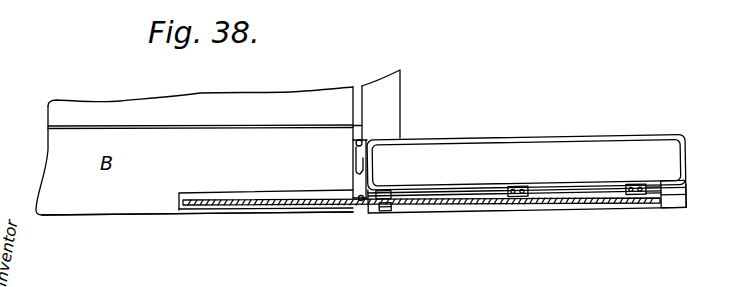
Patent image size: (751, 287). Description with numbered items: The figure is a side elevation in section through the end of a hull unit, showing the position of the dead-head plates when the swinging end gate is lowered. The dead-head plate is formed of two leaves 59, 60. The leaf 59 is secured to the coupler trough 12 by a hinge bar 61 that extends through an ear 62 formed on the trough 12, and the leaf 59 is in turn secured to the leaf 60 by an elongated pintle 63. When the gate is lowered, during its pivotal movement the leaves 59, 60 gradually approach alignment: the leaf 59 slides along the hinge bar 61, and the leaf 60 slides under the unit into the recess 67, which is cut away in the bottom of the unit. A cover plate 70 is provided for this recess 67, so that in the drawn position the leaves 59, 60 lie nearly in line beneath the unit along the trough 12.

The coupler trough 12 is at (615, 210).
The leaf 59 is at (569, 205).
The leaf 60 is at (252, 206).
The hinge bar 61 is at (655, 200).
The ear 62 is at (686, 190).
The elongated pintle 63 is at (361, 201).
The recess 67 is at (206, 193).
The cover plate 70 is at (304, 213).